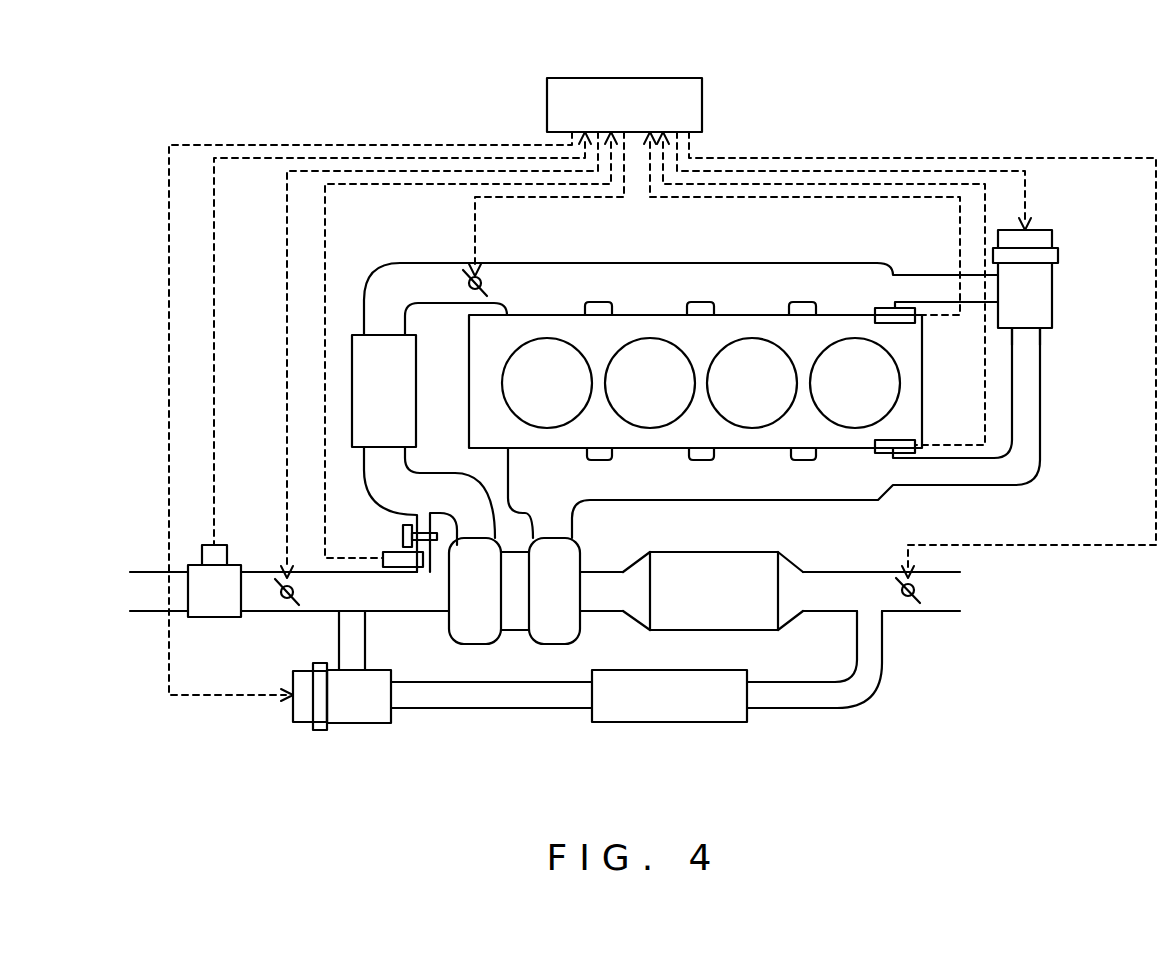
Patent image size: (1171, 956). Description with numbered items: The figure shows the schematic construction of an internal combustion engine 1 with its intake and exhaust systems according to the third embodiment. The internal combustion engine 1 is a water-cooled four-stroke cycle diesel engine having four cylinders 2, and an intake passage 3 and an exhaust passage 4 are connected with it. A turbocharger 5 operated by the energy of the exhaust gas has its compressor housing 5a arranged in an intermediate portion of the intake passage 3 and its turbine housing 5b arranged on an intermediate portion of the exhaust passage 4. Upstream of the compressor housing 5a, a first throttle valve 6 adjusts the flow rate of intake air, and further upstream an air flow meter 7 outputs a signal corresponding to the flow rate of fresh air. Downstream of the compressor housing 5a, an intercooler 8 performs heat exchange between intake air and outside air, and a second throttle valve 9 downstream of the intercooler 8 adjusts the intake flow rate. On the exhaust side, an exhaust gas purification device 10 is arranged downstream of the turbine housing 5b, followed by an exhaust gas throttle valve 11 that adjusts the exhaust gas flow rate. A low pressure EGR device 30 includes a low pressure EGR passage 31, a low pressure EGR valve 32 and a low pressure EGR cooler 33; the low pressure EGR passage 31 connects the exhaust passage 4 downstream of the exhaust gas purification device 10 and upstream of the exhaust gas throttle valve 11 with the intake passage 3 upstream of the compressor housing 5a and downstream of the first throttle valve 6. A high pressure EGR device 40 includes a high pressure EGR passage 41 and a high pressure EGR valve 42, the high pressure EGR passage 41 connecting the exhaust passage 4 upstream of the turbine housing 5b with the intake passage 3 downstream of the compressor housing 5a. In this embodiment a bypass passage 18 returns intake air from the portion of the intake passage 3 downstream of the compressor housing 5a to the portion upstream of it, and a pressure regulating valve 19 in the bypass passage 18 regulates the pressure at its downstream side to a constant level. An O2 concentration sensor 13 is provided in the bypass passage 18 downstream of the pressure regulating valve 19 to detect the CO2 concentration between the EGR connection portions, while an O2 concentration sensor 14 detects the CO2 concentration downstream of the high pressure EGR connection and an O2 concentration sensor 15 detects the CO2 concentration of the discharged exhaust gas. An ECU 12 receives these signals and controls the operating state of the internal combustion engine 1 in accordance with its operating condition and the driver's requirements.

The internal combustion engine 1 is at (896, 262).
The cylinder 2 is at (553, 338).
The intake passage 3 is at (500, 262).
The exhaust passage 4 is at (605, 500).
The turbocharger 5 is at (480, 655).
The compressor housing 5a is at (470, 645).
The turbine housing 5b is at (545, 645).
The first throttle valve 6 is at (282, 598).
The air flow meter 7 is at (228, 558).
The intercooler 8 is at (352, 388).
The second throttle valve 9 is at (470, 290).
The exhaust gas purification device 10 is at (715, 630).
The exhaust gas throttle valve 11 is at (915, 600).
The ECU 12 is at (702, 105).
The O2 concentration sensor 13 is at (380, 568).
The O2 concentration sensor 14 is at (900, 323).
The O2 concentration sensor 15 is at (903, 440).
The bypass passage 18 is at (408, 525).
The pressure regulating valve 19 is at (405, 552).
The low pressure EGR device 30 is at (272, 721).
The low pressure EGR passage 31 is at (780, 708).
The low pressure EGR valve 32 is at (337, 723).
The low pressure EGR cooler 33 is at (668, 722).
The high pressure EGR device 40 is at (1065, 298).
The high pressure EGR passage 41 is at (1040, 340).
The high pressure EGR valve 42 is at (1052, 275).